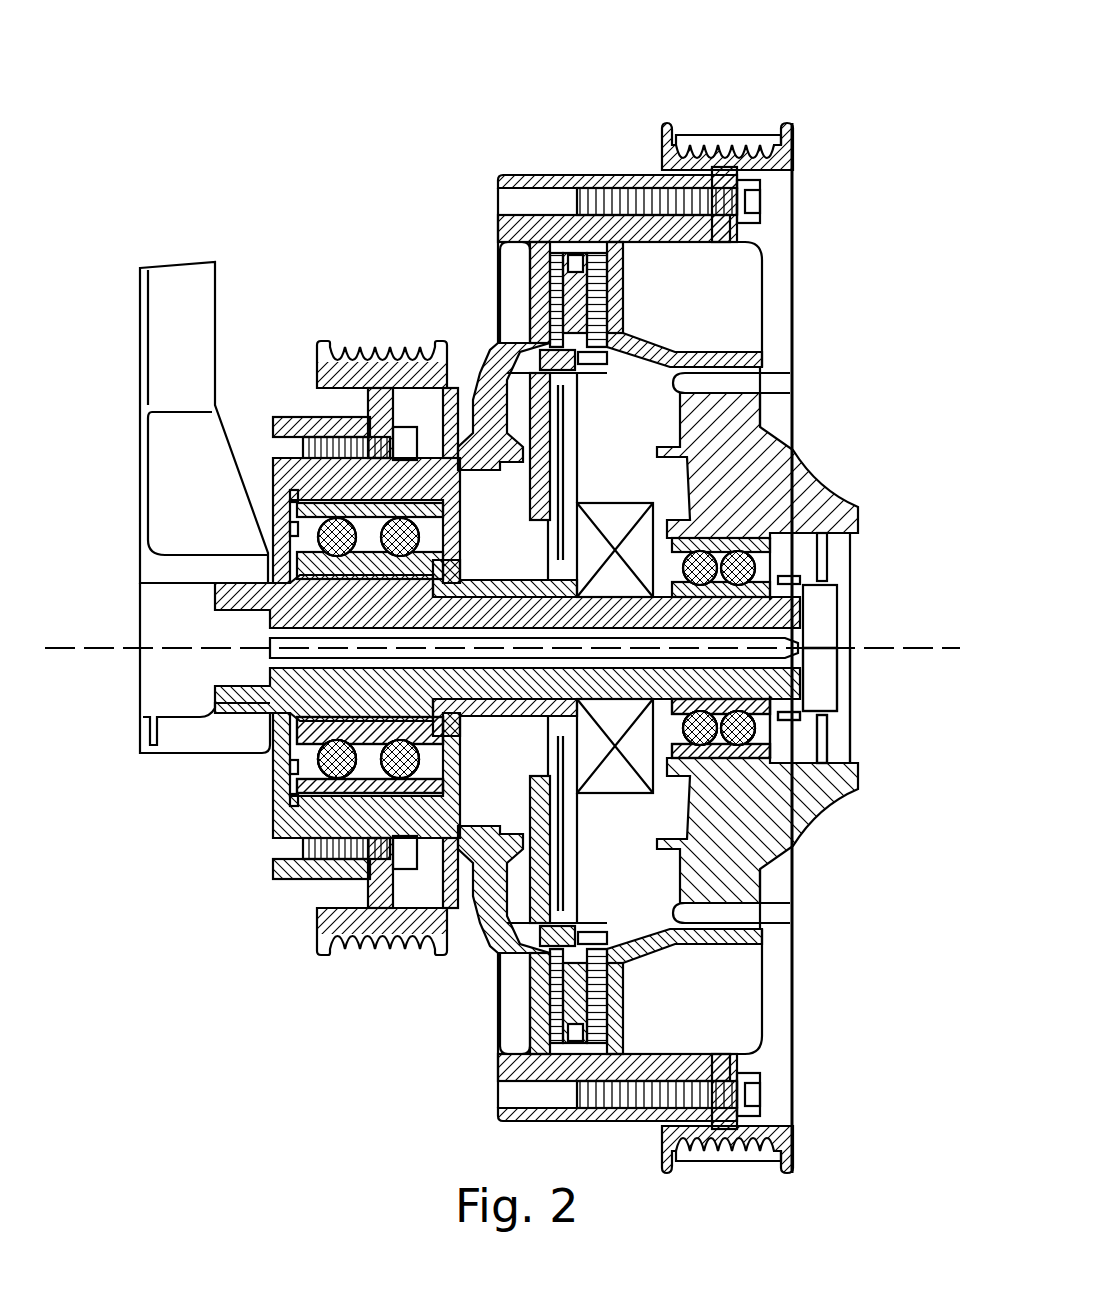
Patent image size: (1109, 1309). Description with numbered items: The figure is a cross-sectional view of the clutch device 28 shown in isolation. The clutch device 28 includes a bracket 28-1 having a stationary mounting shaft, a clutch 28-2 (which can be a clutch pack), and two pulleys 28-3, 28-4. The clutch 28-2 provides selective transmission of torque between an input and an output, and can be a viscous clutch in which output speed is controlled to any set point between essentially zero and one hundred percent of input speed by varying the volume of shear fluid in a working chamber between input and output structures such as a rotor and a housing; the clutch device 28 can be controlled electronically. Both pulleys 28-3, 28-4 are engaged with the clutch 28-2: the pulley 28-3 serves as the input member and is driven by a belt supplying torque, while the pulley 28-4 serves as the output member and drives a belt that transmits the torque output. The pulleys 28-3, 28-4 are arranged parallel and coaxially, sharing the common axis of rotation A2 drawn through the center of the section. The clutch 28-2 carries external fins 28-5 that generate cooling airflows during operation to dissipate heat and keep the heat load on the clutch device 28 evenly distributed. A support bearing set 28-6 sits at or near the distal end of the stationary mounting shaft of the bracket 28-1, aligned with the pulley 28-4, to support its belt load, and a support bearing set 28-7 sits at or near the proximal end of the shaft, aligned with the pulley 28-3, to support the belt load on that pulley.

The clutch device 28 is at (501, 619).
The bracket 28-1 is at (178, 352).
The clutch 28-2 is at (632, 166).
The pulley 28-3 is at (357, 345).
The pulley 28-4 is at (790, 148).
The external fins 28-5 is at (497, 283).
The support bearing set 28-6 is at (745, 748).
The support bearing set 28-7 is at (362, 790).
The axis of rotation A2 is at (892, 645).